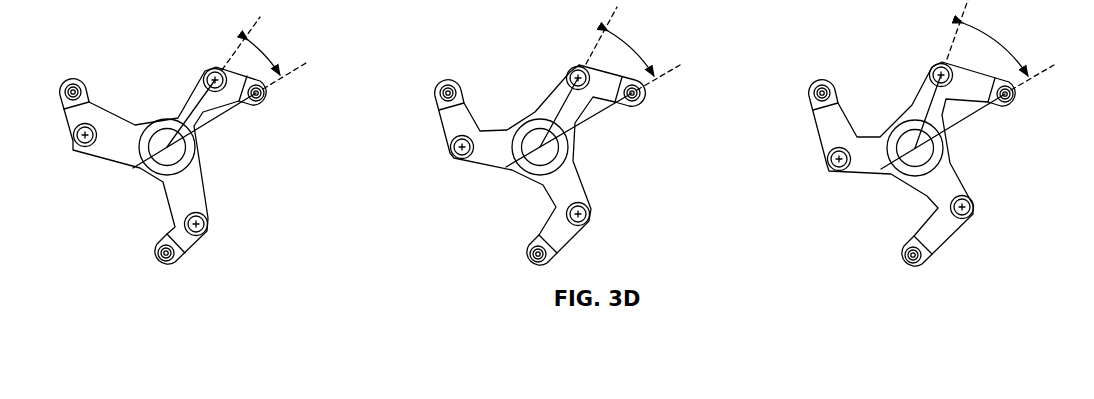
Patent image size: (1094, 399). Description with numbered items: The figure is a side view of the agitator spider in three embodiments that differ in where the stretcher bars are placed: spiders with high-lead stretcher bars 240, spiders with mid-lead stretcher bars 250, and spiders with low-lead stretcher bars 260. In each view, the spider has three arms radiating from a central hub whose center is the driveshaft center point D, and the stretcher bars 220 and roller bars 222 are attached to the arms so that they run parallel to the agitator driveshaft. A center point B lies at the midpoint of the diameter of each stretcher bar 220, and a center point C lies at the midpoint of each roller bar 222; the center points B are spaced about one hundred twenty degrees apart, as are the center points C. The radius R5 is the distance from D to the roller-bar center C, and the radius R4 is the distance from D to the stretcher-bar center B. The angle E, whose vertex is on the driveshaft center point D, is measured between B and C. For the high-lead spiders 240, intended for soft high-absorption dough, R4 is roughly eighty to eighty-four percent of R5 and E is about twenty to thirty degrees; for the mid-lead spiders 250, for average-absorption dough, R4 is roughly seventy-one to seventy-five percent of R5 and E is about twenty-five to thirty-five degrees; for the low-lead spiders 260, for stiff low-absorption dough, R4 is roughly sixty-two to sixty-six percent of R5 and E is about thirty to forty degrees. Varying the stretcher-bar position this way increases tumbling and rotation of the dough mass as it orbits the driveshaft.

The spiders with high-lead stretcher bars 240 is at (128, 33).
The spiders with mid-lead stretcher bars 250 is at (500, 30).
The spiders with low-lead stretcher bars 260 is at (867, 32).
The stretcher bars 220 is at (216, 68).
The roller bars 222 is at (265, 92).
The center point of stretcher bar B is at (206, 76).
The center point of roller bar C is at (62, 97).
The driveshaft center point D is at (140, 164).
The angle between B and C E is at (272, 48).
The radius to stretcher bar center R4 is at (190, 108).
The radius to roller bar center R5 is at (222, 116).